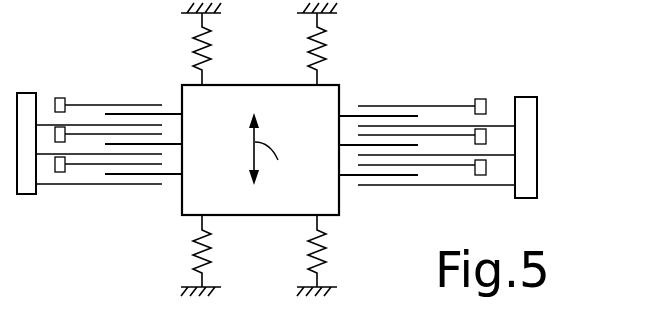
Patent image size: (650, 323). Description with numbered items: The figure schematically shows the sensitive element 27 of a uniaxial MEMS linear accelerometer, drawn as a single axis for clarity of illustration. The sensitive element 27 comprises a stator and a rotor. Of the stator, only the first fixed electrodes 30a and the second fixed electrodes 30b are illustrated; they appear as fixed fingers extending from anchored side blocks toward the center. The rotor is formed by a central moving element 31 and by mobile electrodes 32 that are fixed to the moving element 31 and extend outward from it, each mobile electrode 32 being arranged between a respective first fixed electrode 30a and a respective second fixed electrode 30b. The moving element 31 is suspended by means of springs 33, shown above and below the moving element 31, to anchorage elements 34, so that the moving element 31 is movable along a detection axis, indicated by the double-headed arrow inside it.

The sensitive element 27 is at (118, 245).
The first fixed electrode 30a is at (392, 105).
The second fixed electrode 30b is at (490, 127).
The moving element 31 is at (197, 201).
The mobile electrodes 32 is at (347, 177).
The springs 33 is at (323, 49).
The anchorage elements 34 is at (335, 7).